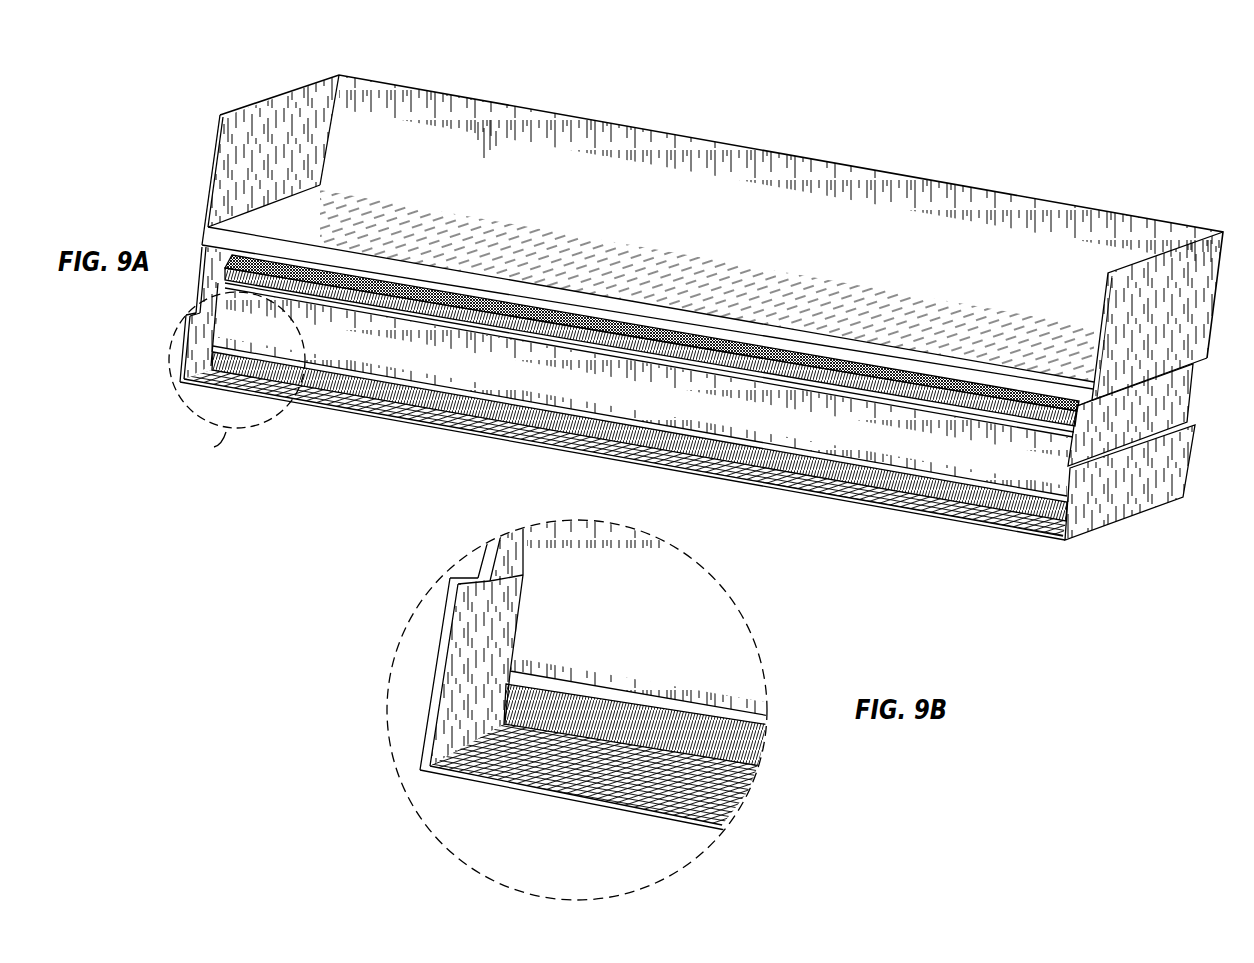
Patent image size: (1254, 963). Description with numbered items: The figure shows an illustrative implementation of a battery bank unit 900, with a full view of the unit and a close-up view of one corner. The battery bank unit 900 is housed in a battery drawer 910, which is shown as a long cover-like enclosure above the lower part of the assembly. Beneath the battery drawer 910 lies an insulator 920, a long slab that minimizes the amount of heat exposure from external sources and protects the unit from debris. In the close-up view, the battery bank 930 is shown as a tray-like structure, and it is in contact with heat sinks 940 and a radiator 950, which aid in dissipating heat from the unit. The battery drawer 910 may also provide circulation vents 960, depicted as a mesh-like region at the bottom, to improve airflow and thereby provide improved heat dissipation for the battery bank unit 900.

In FIG. 9A, the battery bank unit 900 is at (1143, 112).
In FIG. 9B, the battery bank unit 900 is at (387, 847).
In FIG. 9A, the battery drawer 910 is at (904, 190).
In FIG. 9B, the battery drawer 910 is at (478, 563).
In FIG. 9A, the insulator 920 is at (718, 325).
In FIG. 9B, the battery bank 930 is at (718, 617).
In FIG. 9B, the heat sinks 940 is at (632, 695).
In FIG. 9B, the radiator 950 is at (751, 744).
In FIG. 9B, the circulation vents 960 is at (640, 797).